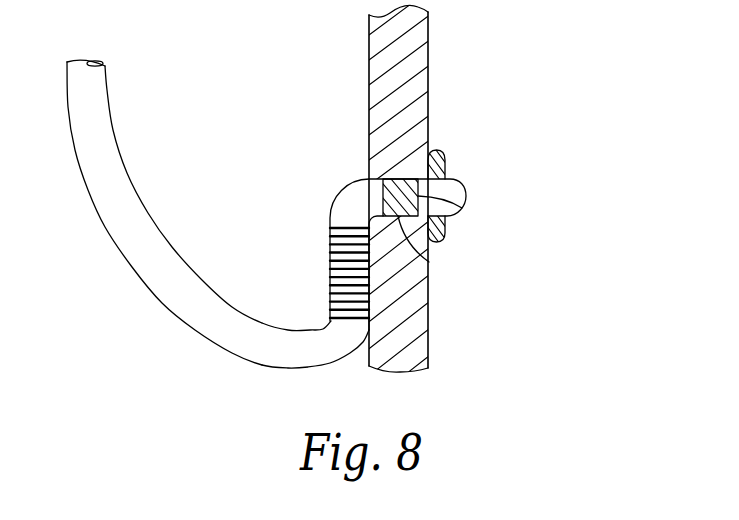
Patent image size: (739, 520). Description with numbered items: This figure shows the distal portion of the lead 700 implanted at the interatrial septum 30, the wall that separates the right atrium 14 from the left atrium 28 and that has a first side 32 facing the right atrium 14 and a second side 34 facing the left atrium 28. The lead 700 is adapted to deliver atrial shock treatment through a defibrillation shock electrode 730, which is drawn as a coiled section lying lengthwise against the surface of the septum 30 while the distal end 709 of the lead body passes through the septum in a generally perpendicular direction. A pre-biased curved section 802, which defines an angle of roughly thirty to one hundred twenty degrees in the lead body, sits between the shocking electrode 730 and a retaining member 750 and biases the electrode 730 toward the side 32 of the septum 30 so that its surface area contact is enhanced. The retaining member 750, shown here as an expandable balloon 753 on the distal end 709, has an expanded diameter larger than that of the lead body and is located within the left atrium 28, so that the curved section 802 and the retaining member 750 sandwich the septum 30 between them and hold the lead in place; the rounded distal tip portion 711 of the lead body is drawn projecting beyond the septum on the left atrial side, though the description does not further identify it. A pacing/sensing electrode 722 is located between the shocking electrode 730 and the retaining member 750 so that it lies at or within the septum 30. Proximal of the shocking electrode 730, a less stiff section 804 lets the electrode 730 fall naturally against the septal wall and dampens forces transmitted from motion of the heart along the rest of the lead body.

The right atrium 14 is at (264, 80).
The left atrium 28 is at (578, 78).
The interatrial septum 30 is at (417, 58).
The first side 32 is at (368, 104).
The second side 34 is at (429, 94).
The lead 700 is at (117, 243).
The distal end 709 is at (431, 263).
The distal anchor 711 is at (466, 195).
The pacing/sensing electrode 722 is at (447, 217).
The defibrillation shock electrode 730 is at (332, 268).
The retaining member 750 is at (445, 164).
The expandable balloon 753 is at (445, 229).
The pre-biased curved section 802 is at (345, 196).
The less stiff section 804 is at (303, 369).